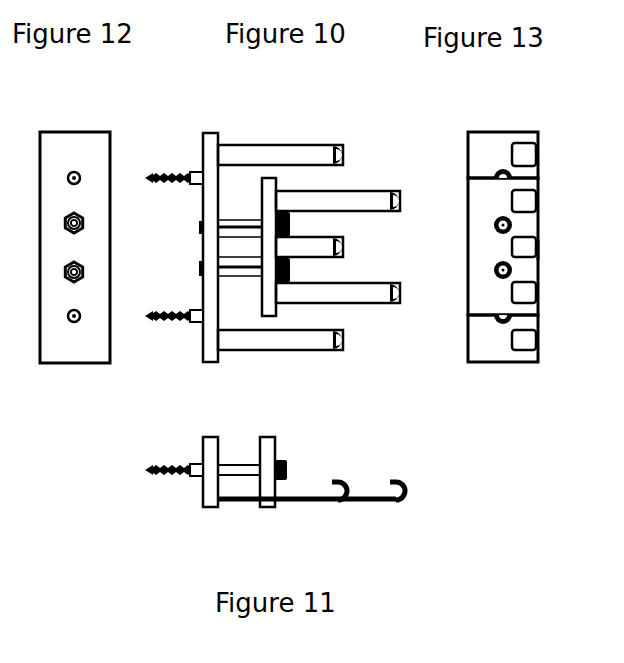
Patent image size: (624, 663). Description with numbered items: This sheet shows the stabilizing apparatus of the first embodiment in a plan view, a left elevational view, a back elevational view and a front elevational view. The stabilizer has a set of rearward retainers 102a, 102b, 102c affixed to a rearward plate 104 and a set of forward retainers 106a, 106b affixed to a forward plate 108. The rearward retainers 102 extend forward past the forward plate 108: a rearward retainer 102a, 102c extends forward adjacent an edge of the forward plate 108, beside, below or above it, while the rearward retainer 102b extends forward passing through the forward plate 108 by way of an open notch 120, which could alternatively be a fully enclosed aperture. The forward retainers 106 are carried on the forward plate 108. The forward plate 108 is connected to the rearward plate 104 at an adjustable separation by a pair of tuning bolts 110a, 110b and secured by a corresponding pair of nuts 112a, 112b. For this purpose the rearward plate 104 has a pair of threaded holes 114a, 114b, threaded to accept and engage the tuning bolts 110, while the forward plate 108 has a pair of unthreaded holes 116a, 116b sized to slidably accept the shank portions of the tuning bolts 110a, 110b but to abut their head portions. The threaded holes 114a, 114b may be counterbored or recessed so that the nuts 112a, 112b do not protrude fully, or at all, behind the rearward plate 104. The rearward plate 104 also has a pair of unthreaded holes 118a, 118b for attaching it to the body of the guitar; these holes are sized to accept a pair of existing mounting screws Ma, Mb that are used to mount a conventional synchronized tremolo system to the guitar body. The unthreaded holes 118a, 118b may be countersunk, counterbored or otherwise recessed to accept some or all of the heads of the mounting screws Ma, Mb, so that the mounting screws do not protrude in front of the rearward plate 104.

In FIG. 11, the rearward retainers 102 is at (340, 478).
In FIG. 10, the rearward retainer 102a is at (280, 340).
In FIG. 13, the rearward retainer 102a is at (532, 331).
In FIG. 10, the rearward retainer 102b is at (309, 247).
In FIG. 13, the rearward retainer 102b is at (532, 238).
In FIG. 10, the rearward retainer 102c is at (280, 155).
In FIG. 13, the rearward retainer 102c is at (532, 143).
In FIG. 10, the rearward plate 104 is at (213, 365).
In FIG. 11, the rearward plate 104 is at (212, 437).
In FIG. 13, the rearward plate 104 is at (505, 161).
In FIG. 11, the forward retainers 106 is at (405, 490).
In FIG. 10, the forward retainer 106a is at (338, 293).
In FIG. 13, the forward retainer 106a is at (532, 283).
In FIG. 10, the forward retainer 106b is at (338, 201).
In FIG. 13, the forward retainer 106b is at (532, 192).
In FIG. 10, the forward plate 108 is at (269, 247).
In FIG. 11, the forward plate 108 is at (268, 437).
In FIG. 13, the forward plate 108 is at (505, 207).
In FIG. 11, the tuning bolts 110 is at (287, 460).
In FIG. 10, the tuning bolt 110a is at (494, 270).
In FIG. 10, the tuning bolt 110b is at (494, 227).
In FIG. 12, the nut 112a is at (82, 276).
In FIG. 12, the nut 112b is at (82, 221).
In FIG. 12, the threaded hole 114a is at (83, 270).
In FIG. 12, the threaded hole 114b is at (83, 228).
In FIG. 10, the unthreaded hole 116a is at (258, 278).
In FIG. 10, the unthreaded hole 116b is at (260, 218).
In FIG. 12, the unthreaded hole 118a is at (74, 318).
In FIG. 12, the unthreaded hole 118b is at (74, 177).
In FIG. 13, the notch 120 is at (538, 247).
In FIG. 10, the mounting screw Ma is at (78, 318).
In FIG. 13, the mounting screw Ma is at (493, 320).
In FIG. 10, the mounting screw Mb is at (78, 176).
In FIG. 13, the mounting screw Mb is at (493, 172).